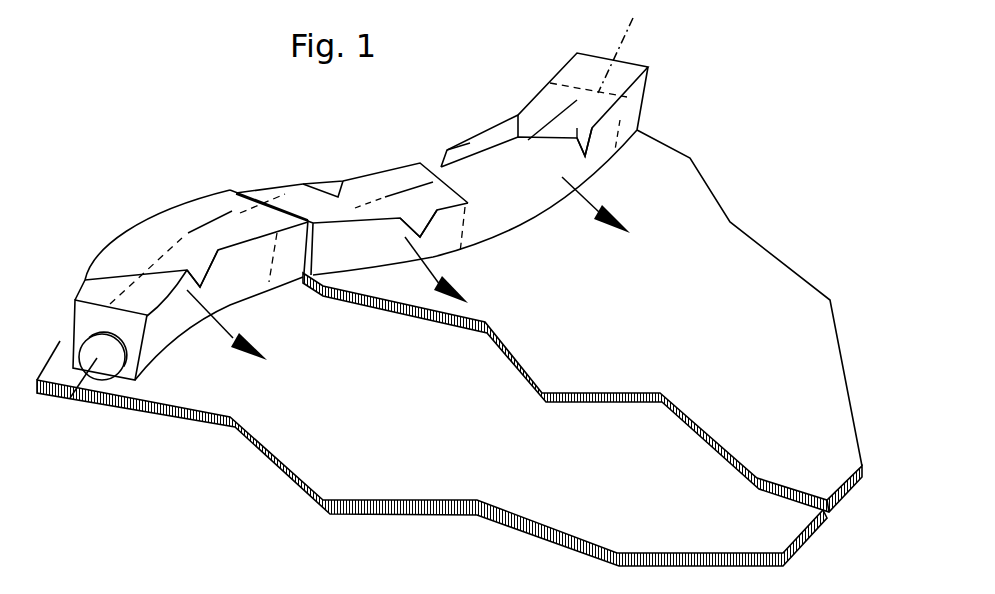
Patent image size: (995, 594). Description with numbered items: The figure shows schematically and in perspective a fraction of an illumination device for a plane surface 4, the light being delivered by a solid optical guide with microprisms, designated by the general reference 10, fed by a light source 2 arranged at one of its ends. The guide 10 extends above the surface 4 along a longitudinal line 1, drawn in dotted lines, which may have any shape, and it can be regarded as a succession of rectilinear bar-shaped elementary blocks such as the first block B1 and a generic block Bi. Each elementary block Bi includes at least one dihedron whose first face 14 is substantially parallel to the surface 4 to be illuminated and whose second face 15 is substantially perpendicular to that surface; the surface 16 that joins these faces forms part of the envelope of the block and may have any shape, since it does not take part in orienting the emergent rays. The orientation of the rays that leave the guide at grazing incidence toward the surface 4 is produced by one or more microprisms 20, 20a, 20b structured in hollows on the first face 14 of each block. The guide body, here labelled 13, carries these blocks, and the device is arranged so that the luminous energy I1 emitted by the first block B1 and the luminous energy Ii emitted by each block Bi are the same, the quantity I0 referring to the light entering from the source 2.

The longitudinal line 1 is at (636, 32).
The light source 2 is at (92, 352).
The plane surface 4 is at (750, 283).
The solid optical guide with microprisms 10 is at (258, 153).
The blade band body 13 is at (170, 420).
The first face 14 is at (210, 213).
The second face 15 is at (157, 323).
The surface 16 is at (72, 300).
The microprism 20 is at (135, 270).
The microprism 20a is at (470, 170).
The microprism 20b is at (580, 137).
The elementary block B1 is at (177, 240).
The elementary block Bi is at (413, 180).
The initial direction indicator I0 is at (66, 405).
The luminous energy I1 is at (240, 342).
The luminous energy Ii is at (446, 275).